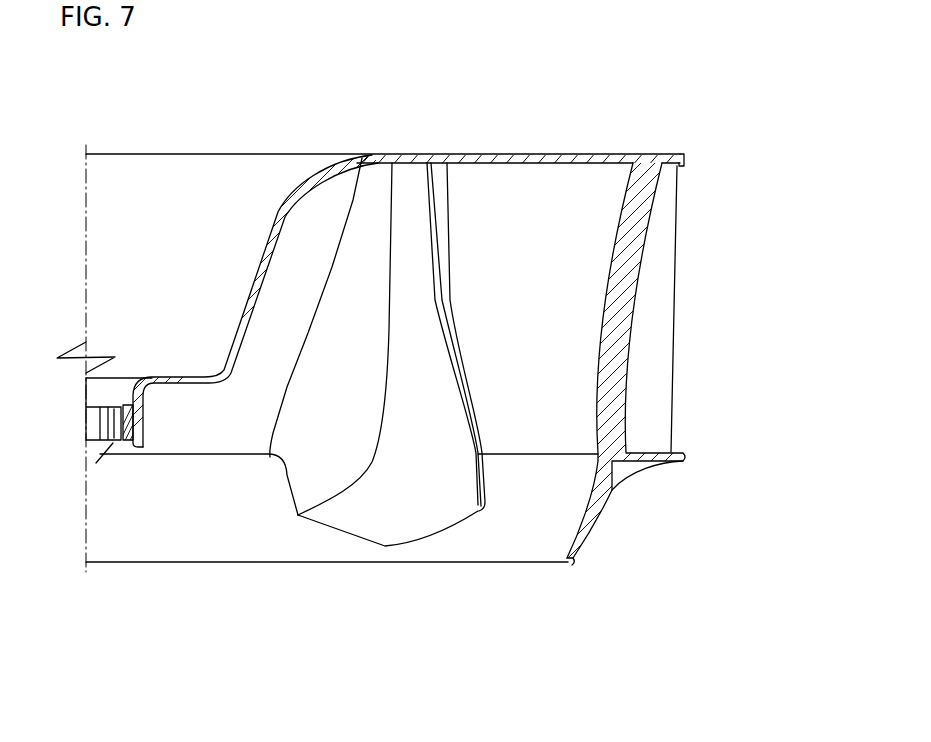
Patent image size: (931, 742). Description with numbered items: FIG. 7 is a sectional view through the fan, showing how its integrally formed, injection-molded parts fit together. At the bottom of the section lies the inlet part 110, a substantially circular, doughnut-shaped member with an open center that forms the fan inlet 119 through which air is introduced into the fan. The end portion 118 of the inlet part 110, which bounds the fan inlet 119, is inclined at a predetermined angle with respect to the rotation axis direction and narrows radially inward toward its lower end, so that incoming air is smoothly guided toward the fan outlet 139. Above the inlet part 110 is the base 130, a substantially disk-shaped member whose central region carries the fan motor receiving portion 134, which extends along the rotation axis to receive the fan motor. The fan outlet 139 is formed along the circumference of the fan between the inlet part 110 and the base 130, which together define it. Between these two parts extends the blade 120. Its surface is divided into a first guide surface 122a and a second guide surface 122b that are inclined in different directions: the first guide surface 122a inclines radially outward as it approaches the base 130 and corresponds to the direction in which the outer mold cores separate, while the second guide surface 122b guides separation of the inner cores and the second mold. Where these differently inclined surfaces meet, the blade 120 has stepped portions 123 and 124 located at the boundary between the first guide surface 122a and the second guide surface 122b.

The inlet part 110 is at (182, 563).
The end portion 118 is at (573, 564).
The fan inlet 119 is at (143, 562).
The blade 120 is at (652, 295).
The first guide surface 122a is at (633, 227).
The second guide surface 122b is at (365, 520).
The stepped portion 123 is at (393, 220).
The stepped portion 124 is at (375, 462).
The base 130 is at (447, 154).
The fan motor receiving portion 134 is at (270, 232).
The fan outlet 139 is at (683, 165).